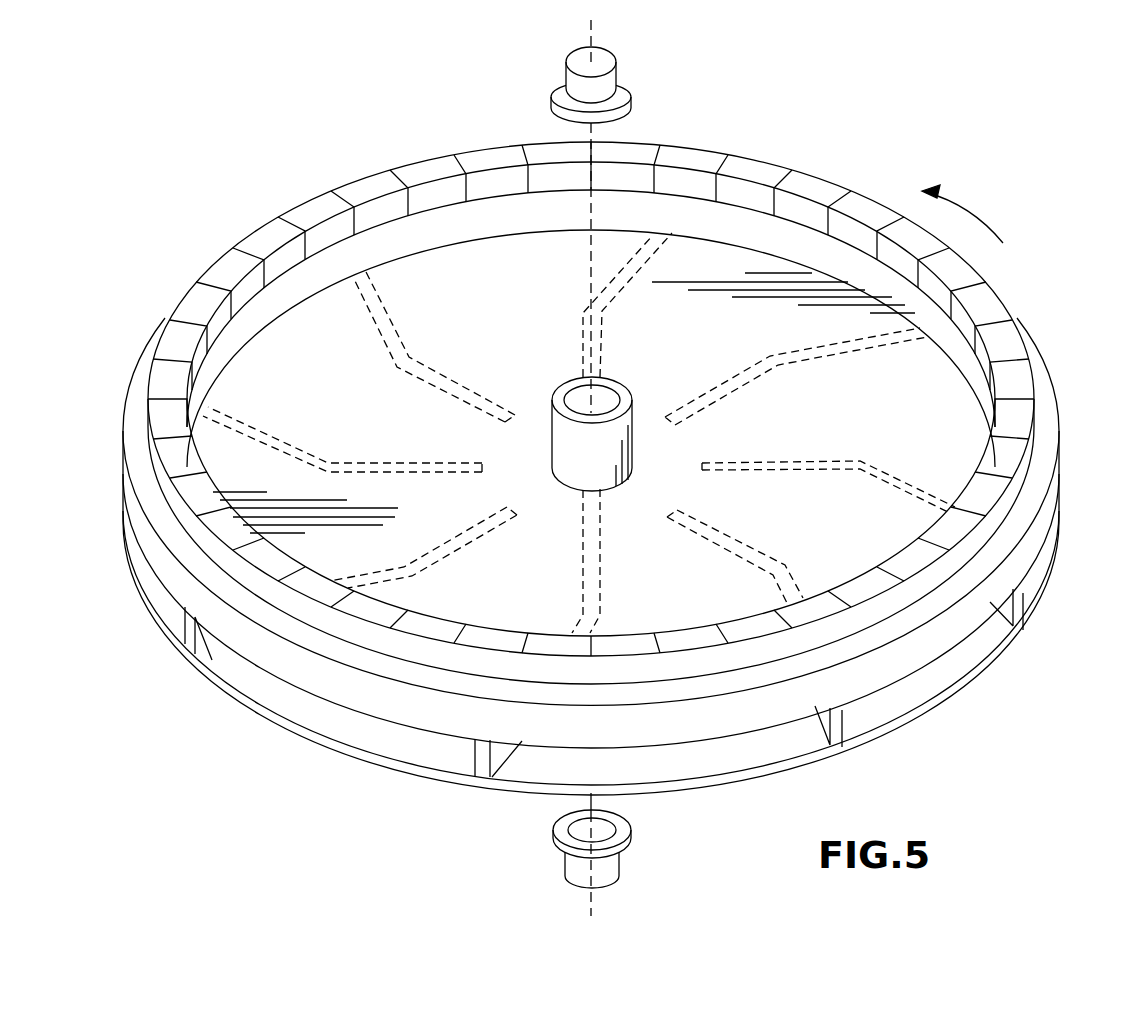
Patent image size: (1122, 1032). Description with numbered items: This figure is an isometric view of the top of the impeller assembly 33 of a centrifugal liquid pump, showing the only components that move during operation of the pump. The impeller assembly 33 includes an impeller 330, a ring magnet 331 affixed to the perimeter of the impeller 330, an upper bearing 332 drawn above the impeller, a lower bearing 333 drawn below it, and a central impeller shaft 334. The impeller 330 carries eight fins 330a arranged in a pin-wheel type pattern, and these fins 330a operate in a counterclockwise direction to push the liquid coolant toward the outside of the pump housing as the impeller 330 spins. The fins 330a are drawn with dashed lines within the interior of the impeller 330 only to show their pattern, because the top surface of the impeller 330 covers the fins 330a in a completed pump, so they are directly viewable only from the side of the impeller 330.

The impeller assembly 33 is at (237, 188).
The impeller 330 is at (739, 718).
The fins 330a is at (376, 335).
The ring magnet 331 is at (750, 190).
The upper bearing 332 is at (613, 58).
The lower bearing 333 is at (556, 853).
The impeller shaft 334 is at (632, 450).